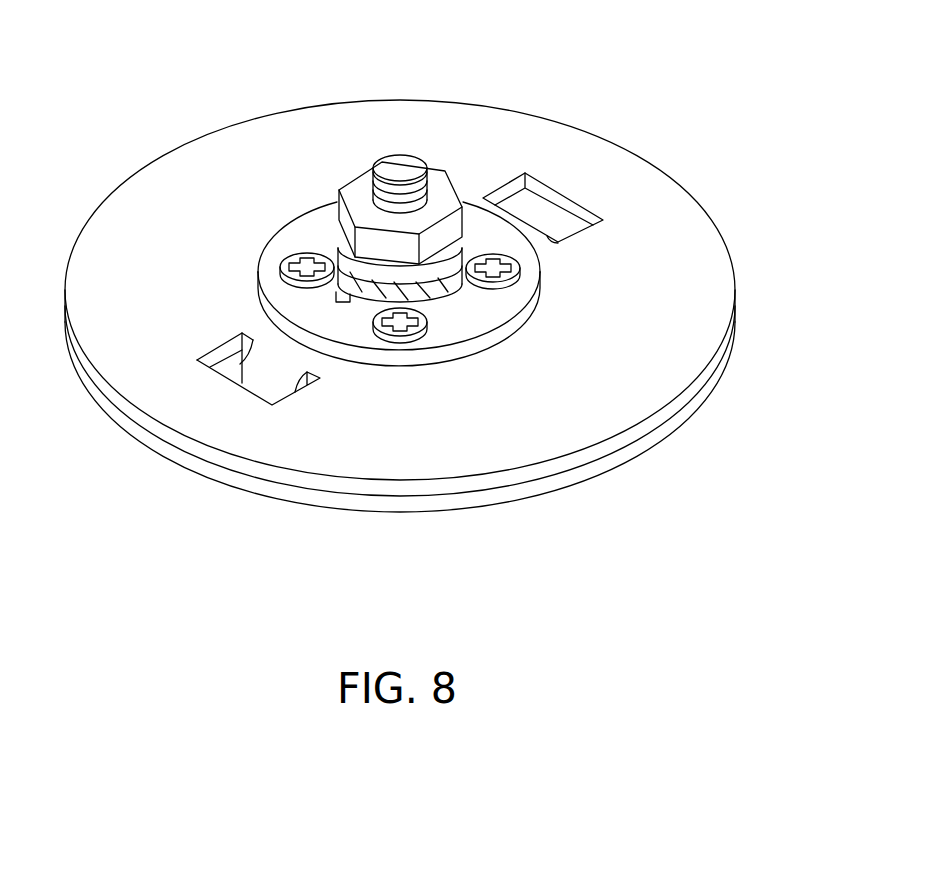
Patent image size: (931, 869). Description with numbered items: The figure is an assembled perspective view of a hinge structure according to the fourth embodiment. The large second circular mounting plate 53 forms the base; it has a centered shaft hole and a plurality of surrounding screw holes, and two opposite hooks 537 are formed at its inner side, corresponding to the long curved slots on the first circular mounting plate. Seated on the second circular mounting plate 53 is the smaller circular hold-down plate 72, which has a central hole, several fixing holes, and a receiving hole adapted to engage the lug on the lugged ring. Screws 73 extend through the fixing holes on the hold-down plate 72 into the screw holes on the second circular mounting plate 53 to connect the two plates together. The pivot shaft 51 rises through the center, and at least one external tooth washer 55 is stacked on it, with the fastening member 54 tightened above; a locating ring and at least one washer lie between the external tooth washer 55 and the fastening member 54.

The pivot shaft 51 is at (408, 168).
The second circular mounting plate 53 is at (103, 268).
The hooks 537 is at (533, 223).
The fastening member 54 is at (356, 188).
The external tooth washer 55 is at (475, 306).
The circular hold-down plate 72 is at (503, 310).
The screws 73 is at (285, 262).